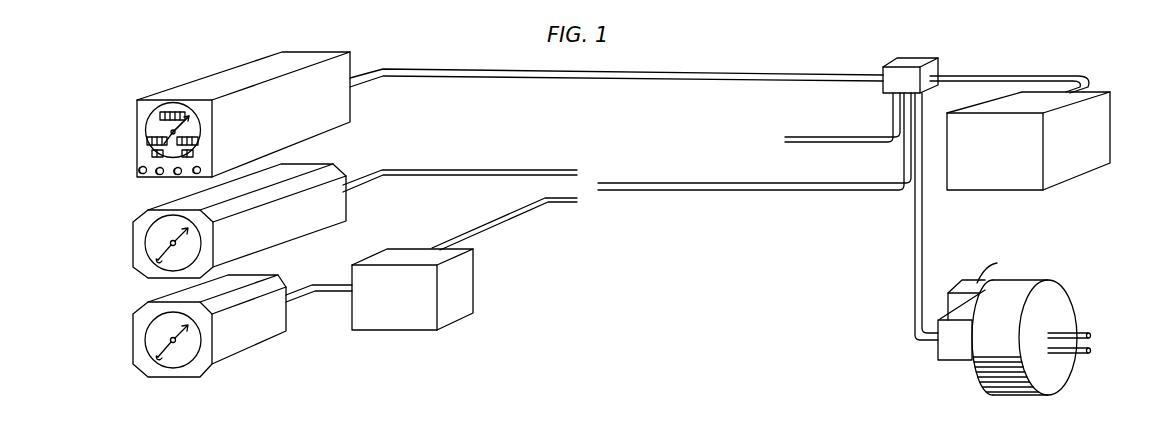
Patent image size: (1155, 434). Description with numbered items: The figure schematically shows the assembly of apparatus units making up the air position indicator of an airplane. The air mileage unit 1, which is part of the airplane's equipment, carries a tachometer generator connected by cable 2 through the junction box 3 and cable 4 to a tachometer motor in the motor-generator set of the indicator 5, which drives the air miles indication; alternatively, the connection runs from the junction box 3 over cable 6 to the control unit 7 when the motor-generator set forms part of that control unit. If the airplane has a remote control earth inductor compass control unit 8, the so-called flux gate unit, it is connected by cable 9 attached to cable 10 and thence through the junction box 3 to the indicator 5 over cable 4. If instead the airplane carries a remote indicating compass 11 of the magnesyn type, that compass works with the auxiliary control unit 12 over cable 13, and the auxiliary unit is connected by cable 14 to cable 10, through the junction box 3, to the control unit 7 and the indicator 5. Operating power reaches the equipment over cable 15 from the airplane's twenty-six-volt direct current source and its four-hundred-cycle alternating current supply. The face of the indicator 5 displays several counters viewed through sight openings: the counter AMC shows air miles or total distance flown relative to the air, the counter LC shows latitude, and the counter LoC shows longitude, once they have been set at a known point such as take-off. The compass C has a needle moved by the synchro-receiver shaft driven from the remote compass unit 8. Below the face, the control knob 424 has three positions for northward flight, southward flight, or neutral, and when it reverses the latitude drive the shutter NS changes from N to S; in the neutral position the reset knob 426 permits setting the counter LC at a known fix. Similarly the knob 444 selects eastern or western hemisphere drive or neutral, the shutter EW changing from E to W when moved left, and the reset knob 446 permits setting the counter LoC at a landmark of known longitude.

The air mileage unit 1 is at (1058, 298).
The cable 2 is at (915, 253).
The junction box 3 is at (883, 88).
The cable 4 is at (632, 80).
The indicator 5 is at (350, 116).
The cable 6 is at (977, 78).
The control unit 7 is at (992, 185).
The remote control earth inductor compass control unit 8 is at (335, 210).
The cable 9 is at (433, 175).
The cable 10 is at (702, 185).
The remote indicating compass 11 is at (280, 328).
The auxiliary control unit 12 is at (420, 330).
The cable 13 is at (320, 292).
The cable 14 is at (505, 220).
The cable 15 is at (825, 143).
The control knob 424 is at (140, 169).
The reset knob 426 is at (158, 174).
The knob 444 is at (197, 173).
The reset knob 446 is at (178, 174).
The air miles counter AMC is at (168, 112).
The compass C is at (187, 128).
The latitude counter LC is at (147, 142).
The longitude counter LoC is at (200, 142).
The shutter NS is at (152, 155).
The shutter EW is at (195, 155).